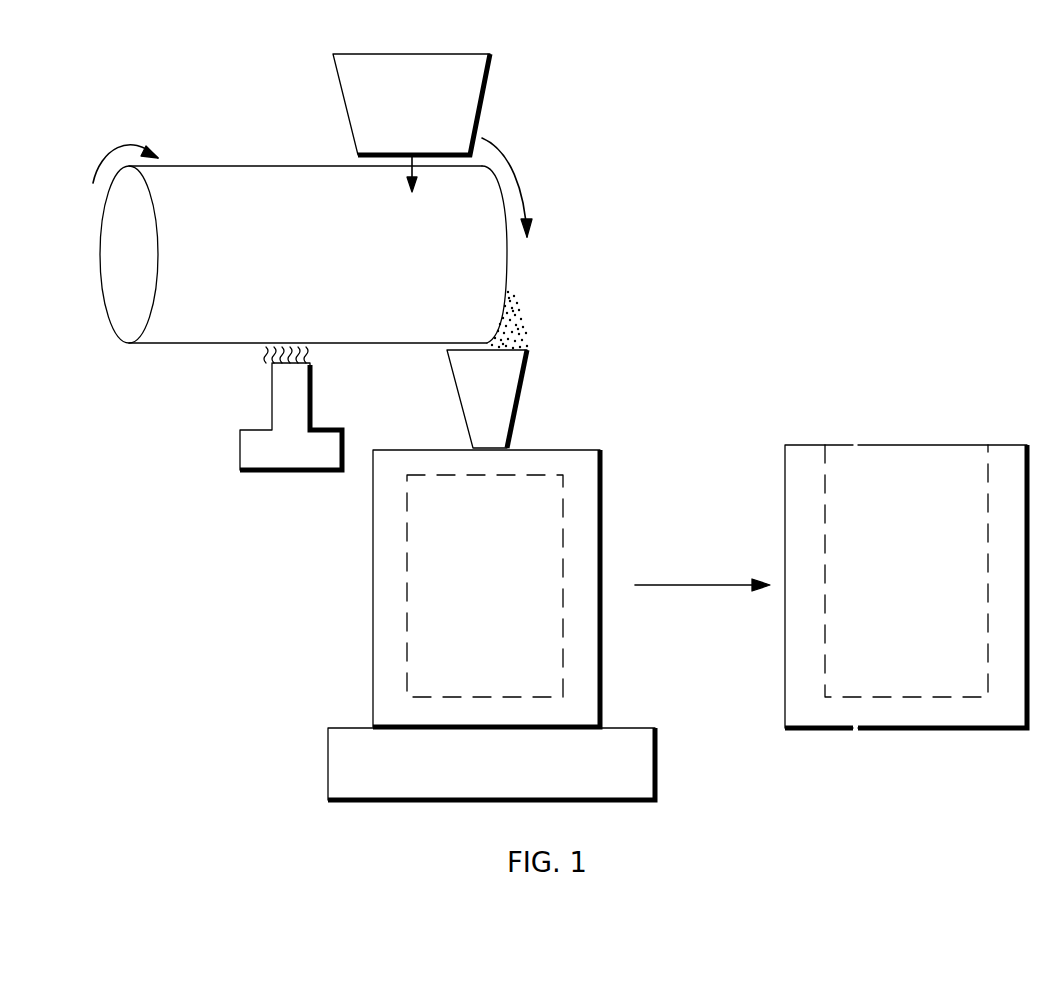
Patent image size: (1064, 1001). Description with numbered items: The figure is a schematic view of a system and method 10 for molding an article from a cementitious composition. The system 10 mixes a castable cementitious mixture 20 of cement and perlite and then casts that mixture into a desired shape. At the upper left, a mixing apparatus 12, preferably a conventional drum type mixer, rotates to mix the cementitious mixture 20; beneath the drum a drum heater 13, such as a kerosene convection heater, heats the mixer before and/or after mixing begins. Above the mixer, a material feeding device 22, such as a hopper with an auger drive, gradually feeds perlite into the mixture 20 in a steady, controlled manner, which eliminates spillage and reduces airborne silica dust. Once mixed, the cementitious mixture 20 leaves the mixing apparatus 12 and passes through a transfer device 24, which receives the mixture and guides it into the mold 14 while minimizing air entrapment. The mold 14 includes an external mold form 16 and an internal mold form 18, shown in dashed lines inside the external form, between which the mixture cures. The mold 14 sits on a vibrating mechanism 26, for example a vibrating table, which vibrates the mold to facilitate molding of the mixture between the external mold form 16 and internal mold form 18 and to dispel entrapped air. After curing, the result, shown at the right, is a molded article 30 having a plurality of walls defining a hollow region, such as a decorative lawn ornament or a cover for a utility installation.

The system and method 10 is at (167, 34).
The mixing apparatus 12 is at (195, 344).
The drum heater 13 is at (240, 441).
The mold 14 is at (526, 556).
The external mold form 16 is at (603, 647).
The internal mold form 18 is at (565, 530).
The castable cementitious mixture 20 is at (513, 332).
The material feeding device 22 is at (490, 85).
The transfer device 24 is at (460, 399).
The vibrating mechanism 26 is at (658, 762).
The molded article 30 is at (800, 445).